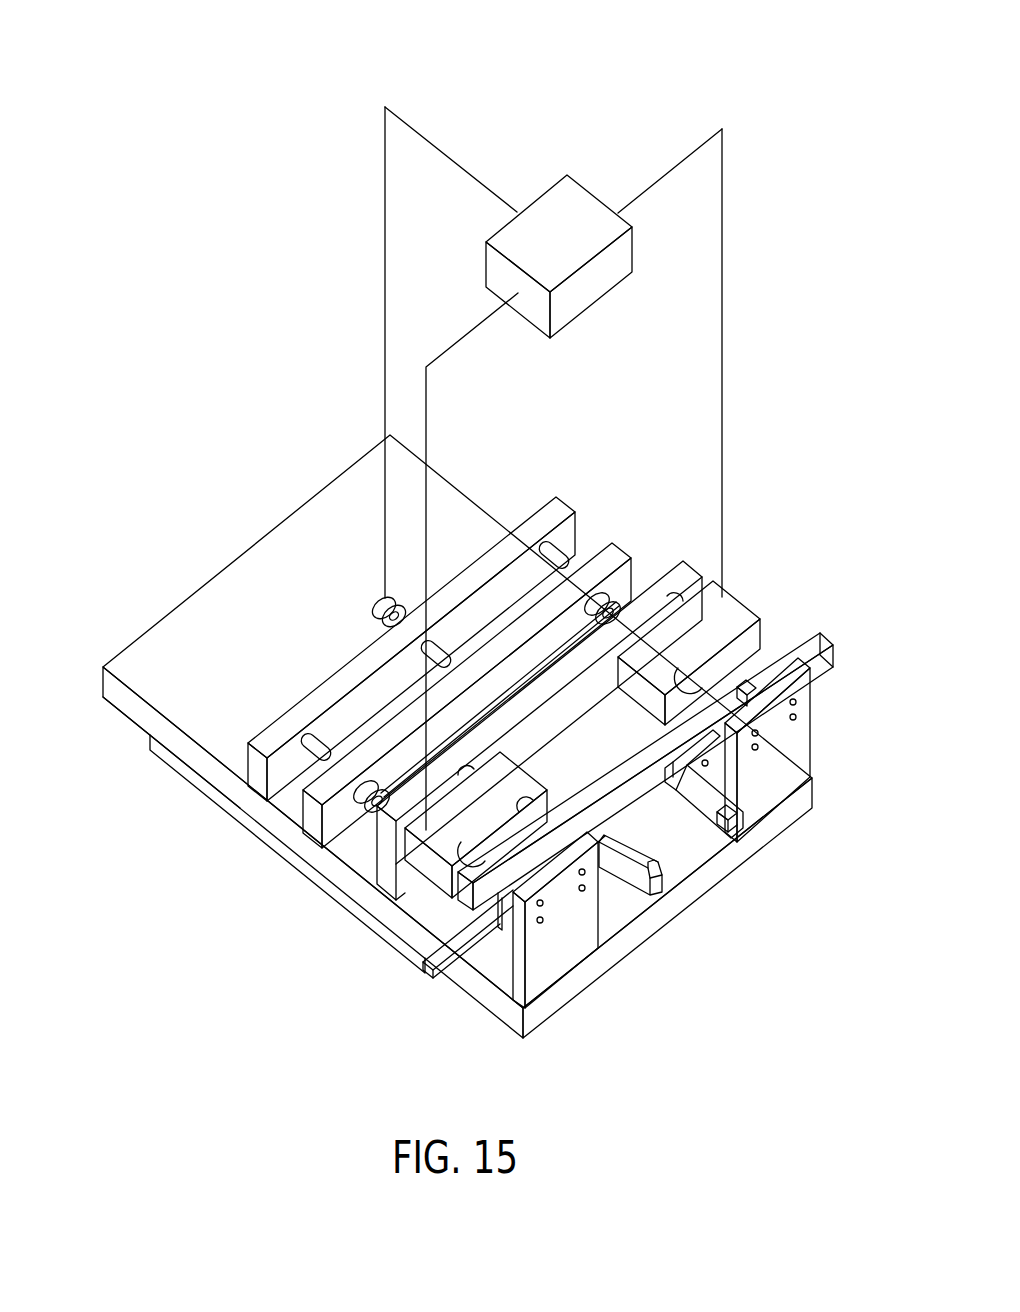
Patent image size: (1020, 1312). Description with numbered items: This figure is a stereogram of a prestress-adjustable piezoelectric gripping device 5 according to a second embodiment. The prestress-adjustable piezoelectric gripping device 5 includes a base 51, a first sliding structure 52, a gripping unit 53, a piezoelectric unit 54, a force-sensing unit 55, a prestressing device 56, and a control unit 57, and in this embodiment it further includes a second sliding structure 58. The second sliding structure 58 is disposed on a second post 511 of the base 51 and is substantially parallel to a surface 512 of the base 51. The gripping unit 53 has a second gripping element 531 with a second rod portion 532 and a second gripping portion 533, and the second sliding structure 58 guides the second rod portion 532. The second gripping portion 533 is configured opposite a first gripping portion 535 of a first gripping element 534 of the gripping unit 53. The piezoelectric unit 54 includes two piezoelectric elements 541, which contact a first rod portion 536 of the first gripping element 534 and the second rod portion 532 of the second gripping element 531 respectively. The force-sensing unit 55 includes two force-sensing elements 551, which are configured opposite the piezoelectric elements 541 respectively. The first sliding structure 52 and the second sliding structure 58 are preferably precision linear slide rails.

The prestress-adjustable piezoelectric gripping device 5 is at (188, 159).
The base 51 is at (172, 777).
The second post 511 is at (540, 968).
The surface 512 is at (153, 687).
The first sliding structure 52 is at (724, 748).
The gripping unit 53 is at (706, 836).
The second gripping element 531 is at (627, 900).
The second rod portion 532 is at (440, 966).
The second gripping portion 533 is at (670, 900).
The first gripping element 534 is at (660, 750).
The first gripping portion 535 is at (735, 826).
The first rod portion 536 is at (824, 660).
The piezoelectric unit 54 is at (532, 863).
The piezoelectric elements 541 is at (745, 688).
The force-sensing unit 55 is at (402, 850).
The force-sensing elements 551 is at (730, 603).
The prestressing device 56 is at (284, 833).
The control unit 57 is at (565, 210).
The second sliding structure 58 is at (510, 923).